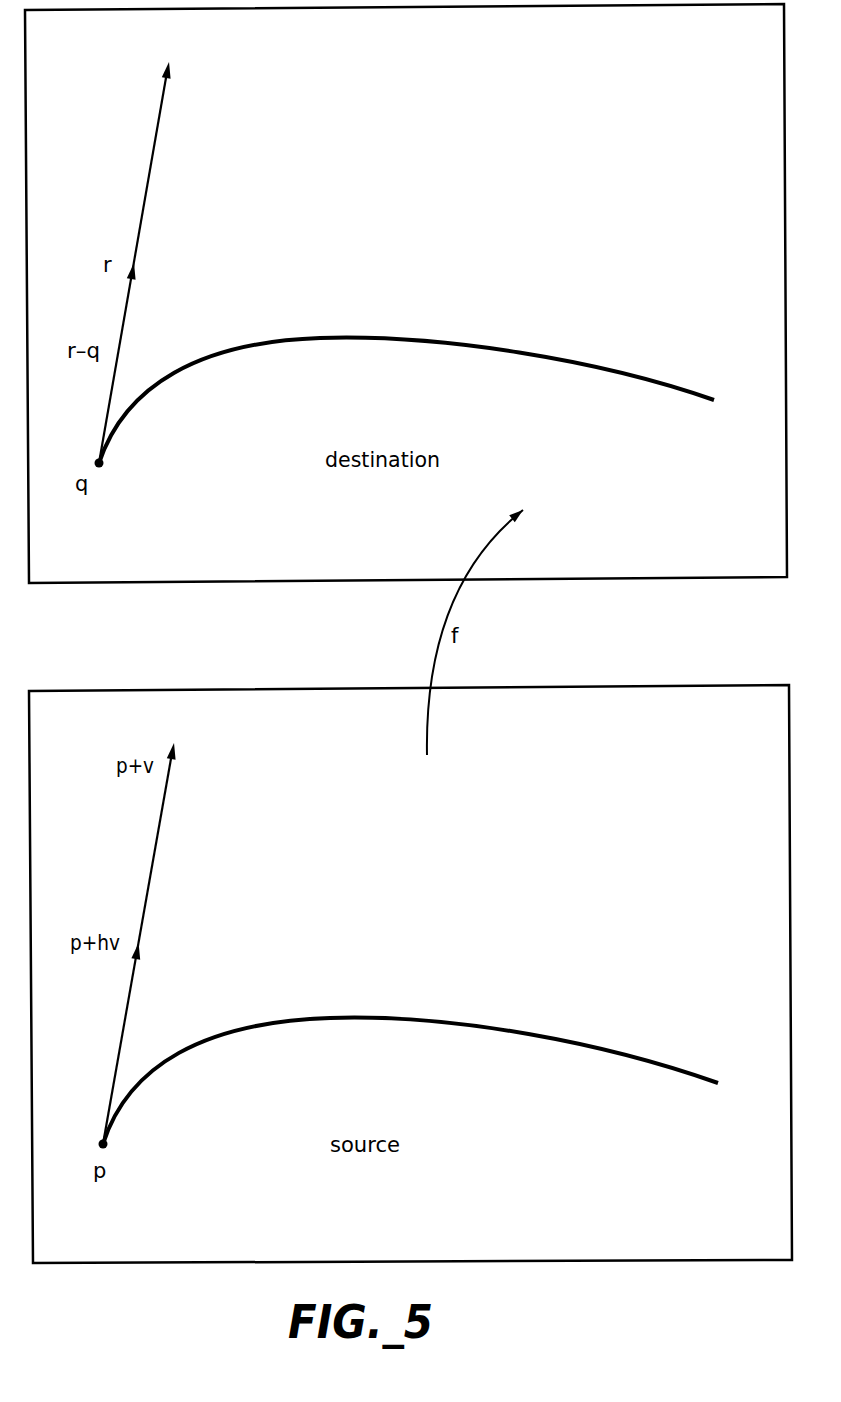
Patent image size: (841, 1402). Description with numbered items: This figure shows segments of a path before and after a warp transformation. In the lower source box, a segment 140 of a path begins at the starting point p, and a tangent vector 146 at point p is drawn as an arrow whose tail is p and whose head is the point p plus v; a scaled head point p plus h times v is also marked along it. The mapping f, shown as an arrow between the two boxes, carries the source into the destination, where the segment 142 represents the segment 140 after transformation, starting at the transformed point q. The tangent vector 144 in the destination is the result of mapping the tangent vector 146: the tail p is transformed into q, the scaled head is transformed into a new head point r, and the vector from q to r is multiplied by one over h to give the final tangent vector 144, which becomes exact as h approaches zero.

The segment 140 is at (355, 1020).
The segment 142 is at (378, 338).
The tangent vector 144 is at (152, 172).
The tangent vector 146 is at (148, 897).